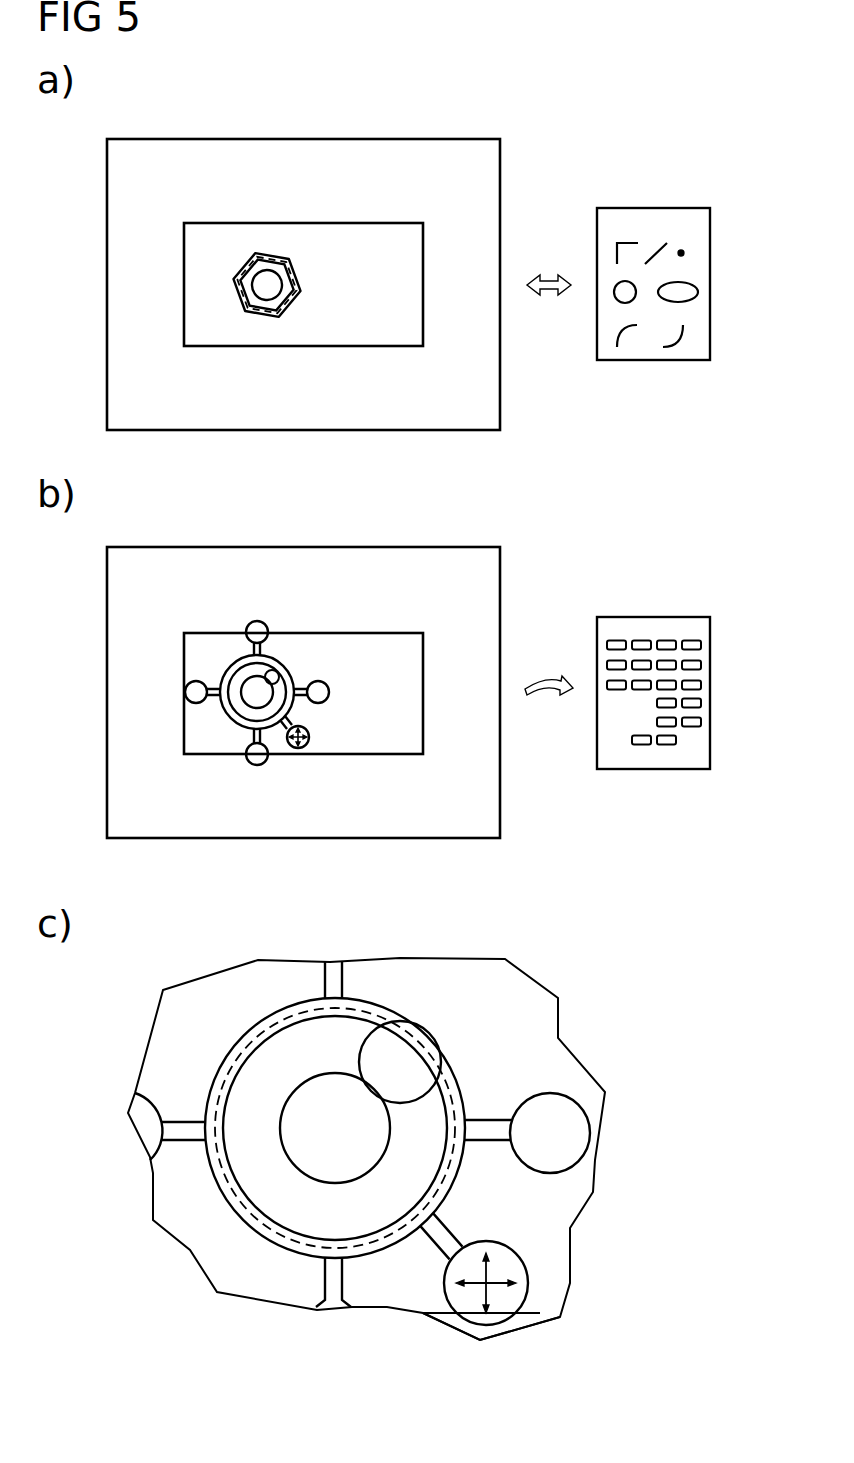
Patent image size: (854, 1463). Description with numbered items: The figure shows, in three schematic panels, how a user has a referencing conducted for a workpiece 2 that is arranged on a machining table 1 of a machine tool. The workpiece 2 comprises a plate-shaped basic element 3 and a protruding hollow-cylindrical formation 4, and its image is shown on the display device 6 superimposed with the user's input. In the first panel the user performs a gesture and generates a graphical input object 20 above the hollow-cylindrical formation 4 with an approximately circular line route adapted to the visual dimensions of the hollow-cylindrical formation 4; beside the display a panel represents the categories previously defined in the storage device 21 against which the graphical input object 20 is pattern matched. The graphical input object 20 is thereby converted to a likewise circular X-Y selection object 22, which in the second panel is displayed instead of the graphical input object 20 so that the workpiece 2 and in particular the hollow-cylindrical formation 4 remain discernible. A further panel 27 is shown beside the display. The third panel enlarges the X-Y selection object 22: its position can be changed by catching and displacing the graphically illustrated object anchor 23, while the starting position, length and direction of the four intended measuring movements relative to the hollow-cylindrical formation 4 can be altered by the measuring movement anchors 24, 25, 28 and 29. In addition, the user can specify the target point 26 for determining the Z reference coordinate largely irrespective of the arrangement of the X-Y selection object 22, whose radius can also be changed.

The machining table 1 is at (482, 157).
The workpiece 2 is at (406, 186).
The plate-shaped basic element 3 is at (368, 232).
The hollow-cylindrical formation 4 is at (273, 268).
The display device 6 is at (152, 125).
The graphical input object 20 is at (252, 258).
The storage device 21 is at (675, 188).
The X-Y selection object 22 is at (288, 1248).
The object anchor 23 is at (298, 749).
The measuring movement anchor 24 is at (256, 621).
The measuring movement anchor 25 is at (318, 705).
The target point 26 is at (272, 670).
The keypad 27 is at (669, 625).
The measuring movement anchor 28 is at (255, 766).
The measuring movement anchor 29 is at (185, 692).